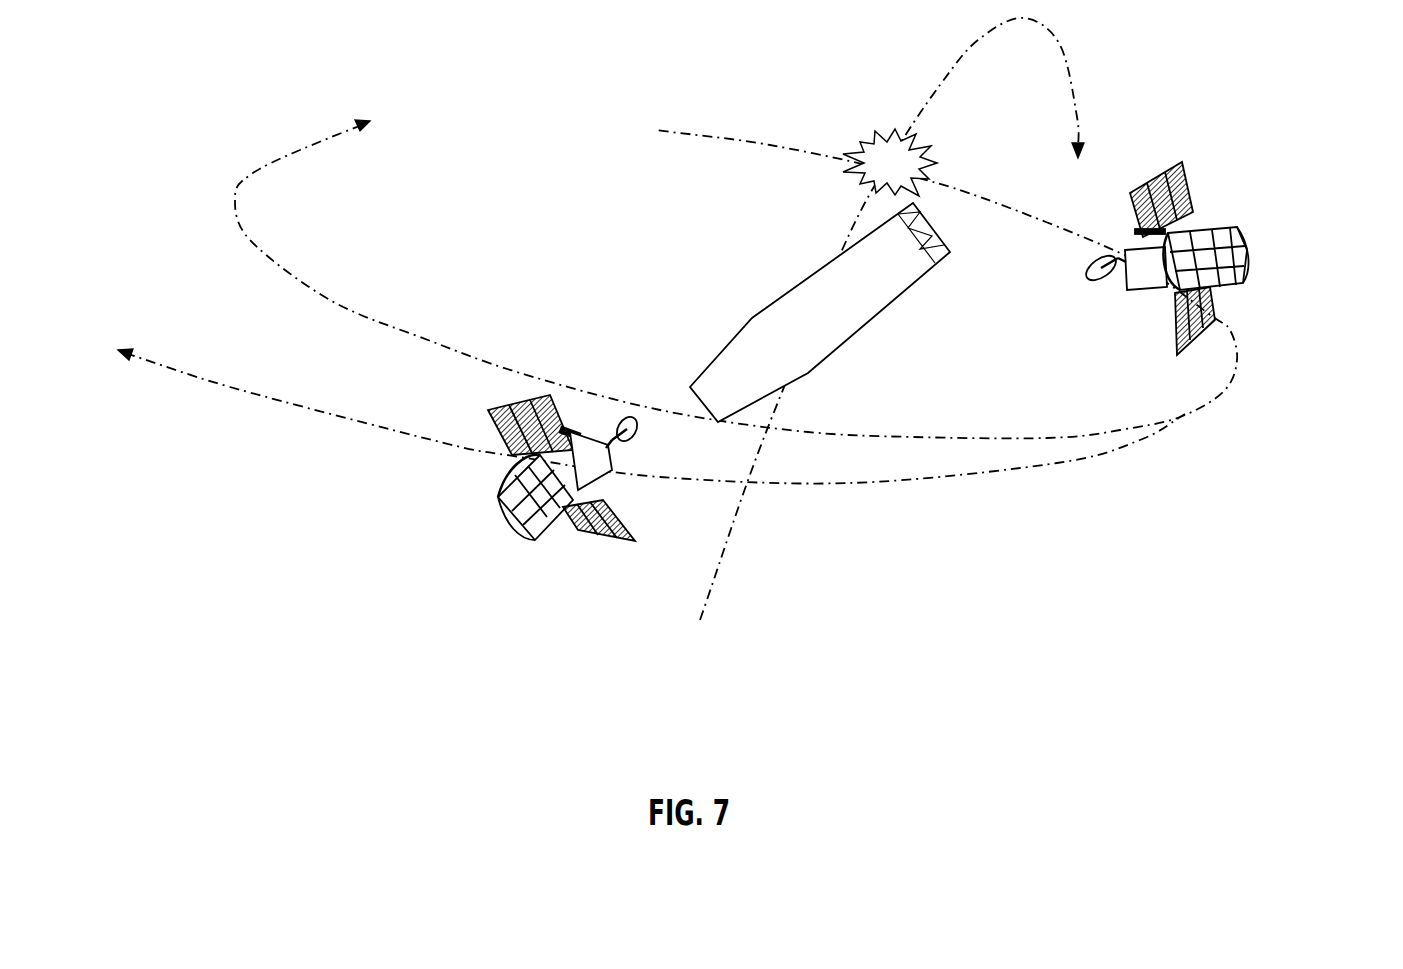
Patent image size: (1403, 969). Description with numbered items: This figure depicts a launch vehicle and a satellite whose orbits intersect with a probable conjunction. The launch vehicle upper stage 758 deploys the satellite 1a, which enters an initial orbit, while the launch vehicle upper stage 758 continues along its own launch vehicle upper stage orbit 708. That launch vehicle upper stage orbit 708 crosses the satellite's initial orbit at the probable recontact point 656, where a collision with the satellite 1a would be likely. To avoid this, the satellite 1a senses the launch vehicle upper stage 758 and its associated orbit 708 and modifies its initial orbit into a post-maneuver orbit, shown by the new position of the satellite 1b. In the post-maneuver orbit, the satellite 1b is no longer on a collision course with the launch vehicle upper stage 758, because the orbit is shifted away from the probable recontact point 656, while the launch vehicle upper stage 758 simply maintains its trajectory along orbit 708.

The probable recontact point 656 is at (890, 120).
The launch vehicle upper stage 758 is at (905, 292).
The launch vehicle upper stage orbit 708 is at (732, 537).
The satellite 1a is at (1233, 226).
The satellite 1b is at (540, 500).